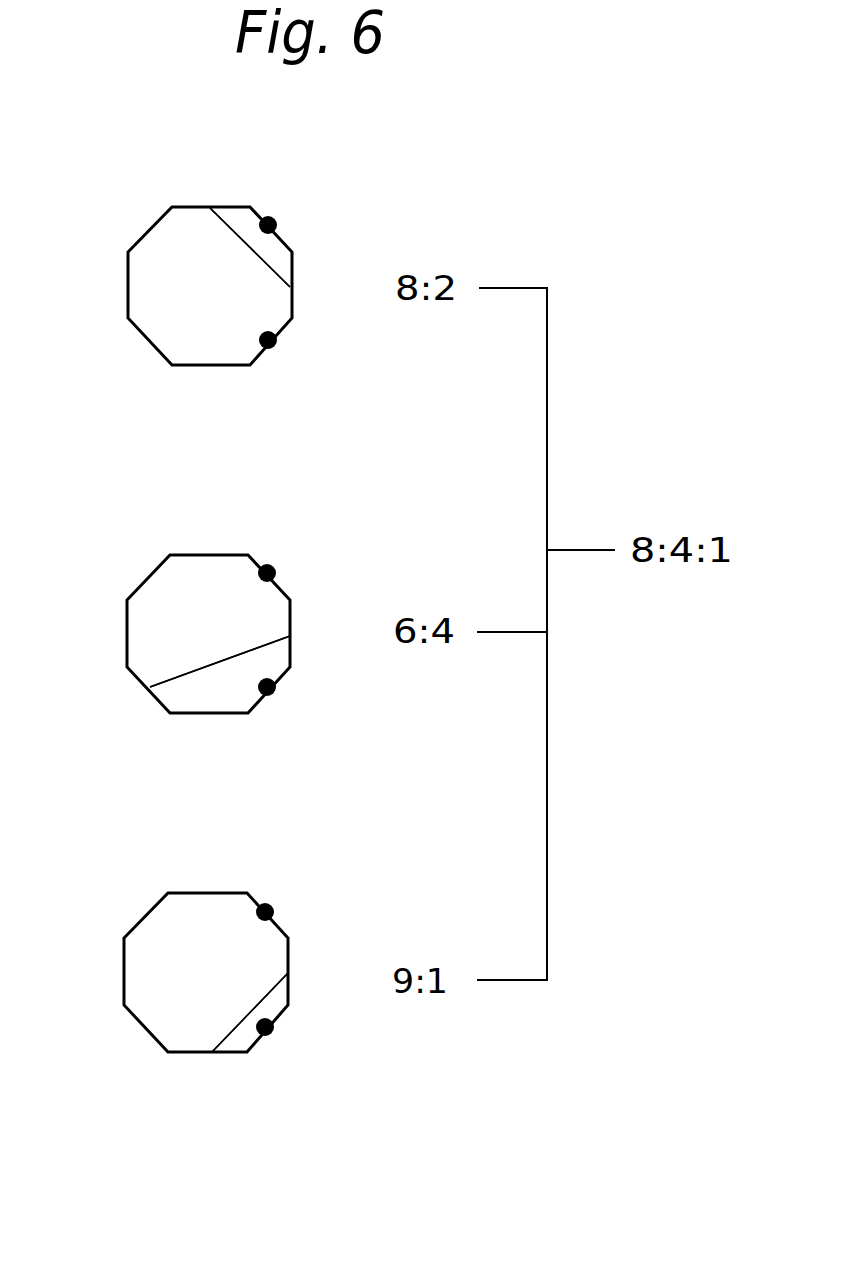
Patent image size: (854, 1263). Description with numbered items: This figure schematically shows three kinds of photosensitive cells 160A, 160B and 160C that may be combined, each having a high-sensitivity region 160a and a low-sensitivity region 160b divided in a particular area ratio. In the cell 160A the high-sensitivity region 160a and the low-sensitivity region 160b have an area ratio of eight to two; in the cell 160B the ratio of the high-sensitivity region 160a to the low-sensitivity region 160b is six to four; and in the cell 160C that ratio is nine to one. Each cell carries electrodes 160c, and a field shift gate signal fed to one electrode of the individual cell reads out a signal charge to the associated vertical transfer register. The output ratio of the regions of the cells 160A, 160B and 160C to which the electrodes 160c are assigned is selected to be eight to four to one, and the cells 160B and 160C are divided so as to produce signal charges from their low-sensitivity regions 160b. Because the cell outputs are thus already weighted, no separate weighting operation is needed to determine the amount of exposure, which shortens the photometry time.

The photosensitive cell 160A is at (148, 343).
The photosensitive cell 160B is at (138, 680).
The photosensitive cell 160C is at (143, 1030).
The high-sensitivity region 160a is at (213, 340).
The low-sensitivity region 160b is at (238, 223).
The electrode 160c is at (278, 338).